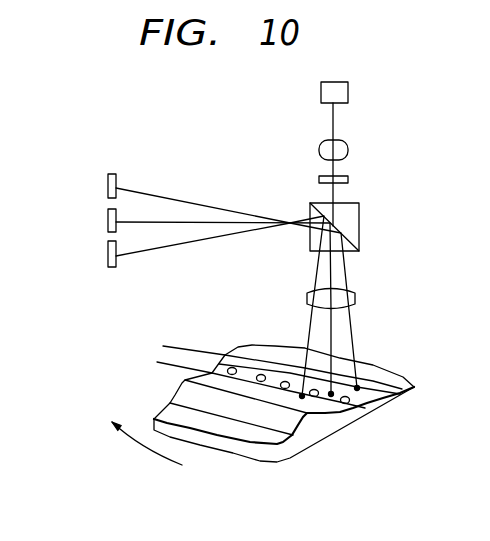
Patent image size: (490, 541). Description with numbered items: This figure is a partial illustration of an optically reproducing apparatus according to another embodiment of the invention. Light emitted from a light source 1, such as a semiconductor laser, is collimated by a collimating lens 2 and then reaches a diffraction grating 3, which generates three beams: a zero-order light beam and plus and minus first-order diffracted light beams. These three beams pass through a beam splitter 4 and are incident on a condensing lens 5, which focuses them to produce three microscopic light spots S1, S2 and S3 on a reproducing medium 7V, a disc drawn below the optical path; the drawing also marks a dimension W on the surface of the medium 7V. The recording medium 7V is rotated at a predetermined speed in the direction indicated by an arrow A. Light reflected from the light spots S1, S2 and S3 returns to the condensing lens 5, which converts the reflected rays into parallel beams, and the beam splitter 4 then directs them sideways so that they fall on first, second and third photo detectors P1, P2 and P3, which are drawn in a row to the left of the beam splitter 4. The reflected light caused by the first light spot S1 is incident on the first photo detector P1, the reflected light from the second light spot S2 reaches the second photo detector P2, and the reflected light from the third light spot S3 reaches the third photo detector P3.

The light source 1 is at (349, 91).
The collimating lens 2 is at (349, 150).
The diffraction grating 3 is at (349, 179).
The beam splitter 4 is at (360, 222).
The condensing lens 5 is at (356, 297).
The reproducing medium 7V is at (404, 360).
The first photo detector P1 is at (108, 222).
The second photo detector P2 is at (108, 183).
The third photo detector P3 is at (108, 256).
The first light spot S1 is at (331, 394).
The second light spot S2 is at (357, 388).
The third light spot S3 is at (302, 396).
The street width W is at (178, 349).
The arrow A is at (153, 450).